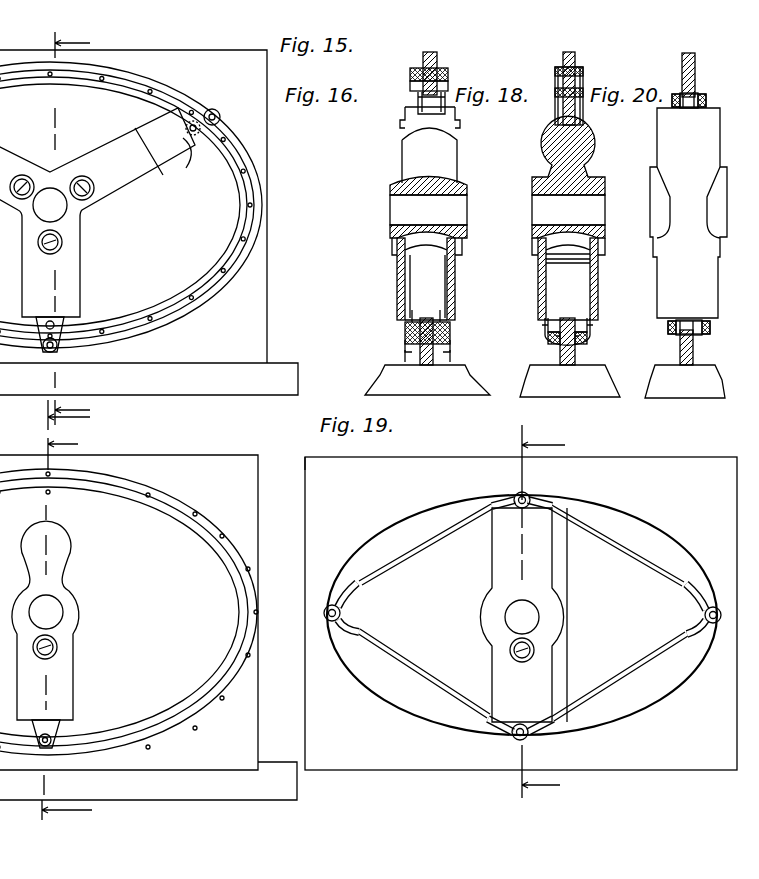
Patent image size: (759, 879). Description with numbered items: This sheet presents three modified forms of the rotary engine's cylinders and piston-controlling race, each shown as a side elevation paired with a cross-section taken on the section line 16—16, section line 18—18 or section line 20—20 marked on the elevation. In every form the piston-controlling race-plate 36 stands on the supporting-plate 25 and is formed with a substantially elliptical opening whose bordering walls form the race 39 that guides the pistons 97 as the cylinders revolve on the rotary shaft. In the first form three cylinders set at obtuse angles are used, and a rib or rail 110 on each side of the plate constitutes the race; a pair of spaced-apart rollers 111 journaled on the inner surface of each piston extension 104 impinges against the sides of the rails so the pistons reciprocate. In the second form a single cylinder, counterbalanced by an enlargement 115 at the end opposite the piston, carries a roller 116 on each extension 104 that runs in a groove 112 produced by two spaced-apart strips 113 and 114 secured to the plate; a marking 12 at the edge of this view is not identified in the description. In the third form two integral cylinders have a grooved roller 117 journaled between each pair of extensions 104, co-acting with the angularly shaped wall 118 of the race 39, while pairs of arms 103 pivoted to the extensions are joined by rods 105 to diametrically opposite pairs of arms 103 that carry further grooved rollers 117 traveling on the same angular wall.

In FIG. 17, the frame 12 is at (42, 745).
In FIG. 15, the section line 16 is at (59, 228).
In FIG. 17, the section line 16 is at (60, 415).
In FIG. 17, the section line 18 is at (55, 628).
In FIG. 19, the section line 20 is at (531, 611).
In FIG. 15, the supporting-plate 25 is at (149, 222).
In FIG. 17, the supporting-plate 25 is at (148, 627).
In FIG. 16, the supporting-plate 25 is at (427, 380).
In FIG. 18, the supporting-plate 25 is at (570, 381).
In FIG. 20, the supporting-plate 25 is at (685, 381).
In FIG. 15, the piston-controlling race-plate 36 is at (131, 205).
In FIG. 17, the piston-controlling race-plate 36 is at (129, 612).
In FIG. 16, the piston-controlling race-plate 36 is at (437, 60).
In FIG. 18, the piston-controlling race-plate 36 is at (563, 60).
In FIG. 20, the piston-controlling race-plate 36 is at (682, 70).
In FIG. 19, the piston-controlling race-plate 36 is at (329, 476).
In FIG. 20, the race 39 is at (680, 93).
In FIG. 19, the race 39 is at (395, 522).
In FIG. 15, the piston 97 is at (97, 212).
In FIG. 16, the piston 97 is at (430, 132).
In FIG. 18, the piston 97 is at (568, 257).
In FIG. 20, the arm 103 is at (706, 100).
In FIG. 19, the arm 103 is at (352, 632).
In FIG. 15, the extension 104 is at (178, 140).
In FIG. 17, the extension 104 is at (55, 727).
In FIG. 16, the extension 104 is at (445, 112).
In FIG. 18, the extension 104 is at (545, 330).
In FIG. 20, the extension 104 is at (690, 108).
In FIG. 19, the rod 105 is at (420, 550).
In FIG. 16, the rib or rail 110 is at (448, 80).
In FIG. 15, the roller 111 is at (193, 122).
In FIG. 16, the roller 111 is at (412, 316).
In FIG. 18, the groove 112 is at (556, 78).
In FIG. 18, the strip 113 is at (566, 98).
In FIG. 18, the strip 114 is at (575, 62).
In FIG. 17, the enlargement 115 is at (60, 552).
In FIG. 18, the enlargement 115 is at (552, 150).
In FIG. 19, the enlargement 115 is at (523, 615).
In FIG. 18, the roller 116 is at (550, 340).
In FIG. 20, the grooved roller 117 is at (700, 100).
In FIG. 19, the grooved roller 117 is at (328, 604).
In FIG. 20, the angularly shaped edge or wall 118 is at (695, 96).